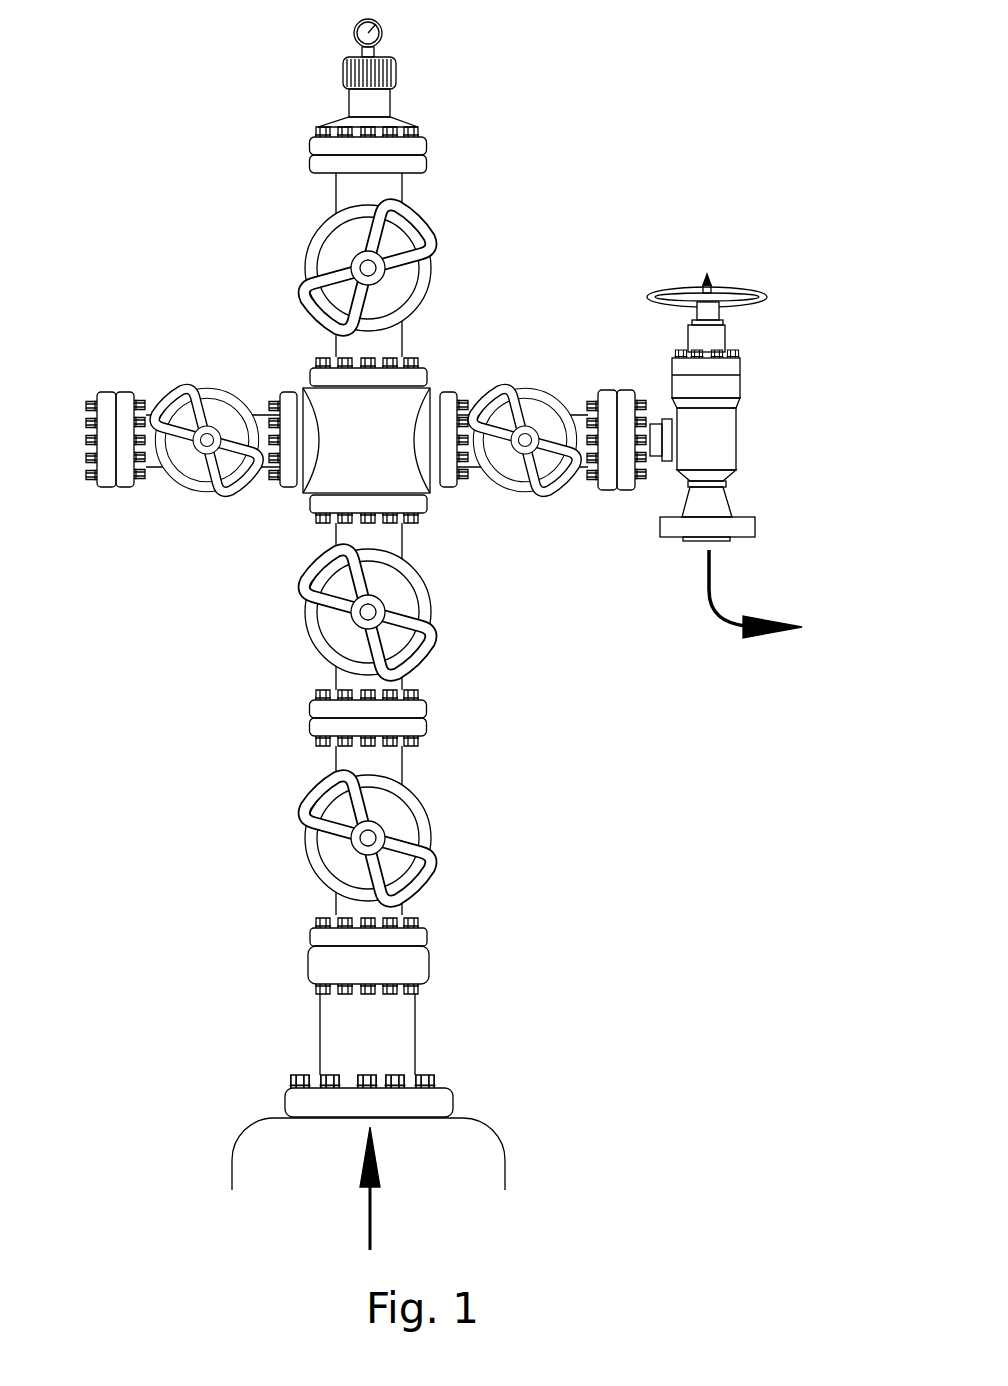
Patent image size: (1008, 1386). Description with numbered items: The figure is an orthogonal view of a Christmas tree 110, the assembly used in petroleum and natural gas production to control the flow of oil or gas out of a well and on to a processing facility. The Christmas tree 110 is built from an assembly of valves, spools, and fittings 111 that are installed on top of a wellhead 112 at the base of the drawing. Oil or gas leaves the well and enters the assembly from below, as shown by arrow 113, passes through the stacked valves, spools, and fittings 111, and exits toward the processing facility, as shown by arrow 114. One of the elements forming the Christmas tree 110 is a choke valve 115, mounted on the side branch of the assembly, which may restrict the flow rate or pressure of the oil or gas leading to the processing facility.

The Christmas tree 110 is at (462, 634).
The valves, spools, and fittings 111 is at (338, 845).
The wellhead 112 is at (275, 1163).
The arrow showing flow out of the well 113 is at (372, 1205).
The arrow showing flow to processing facility 114 is at (709, 591).
The choke valve 115 is at (733, 442).